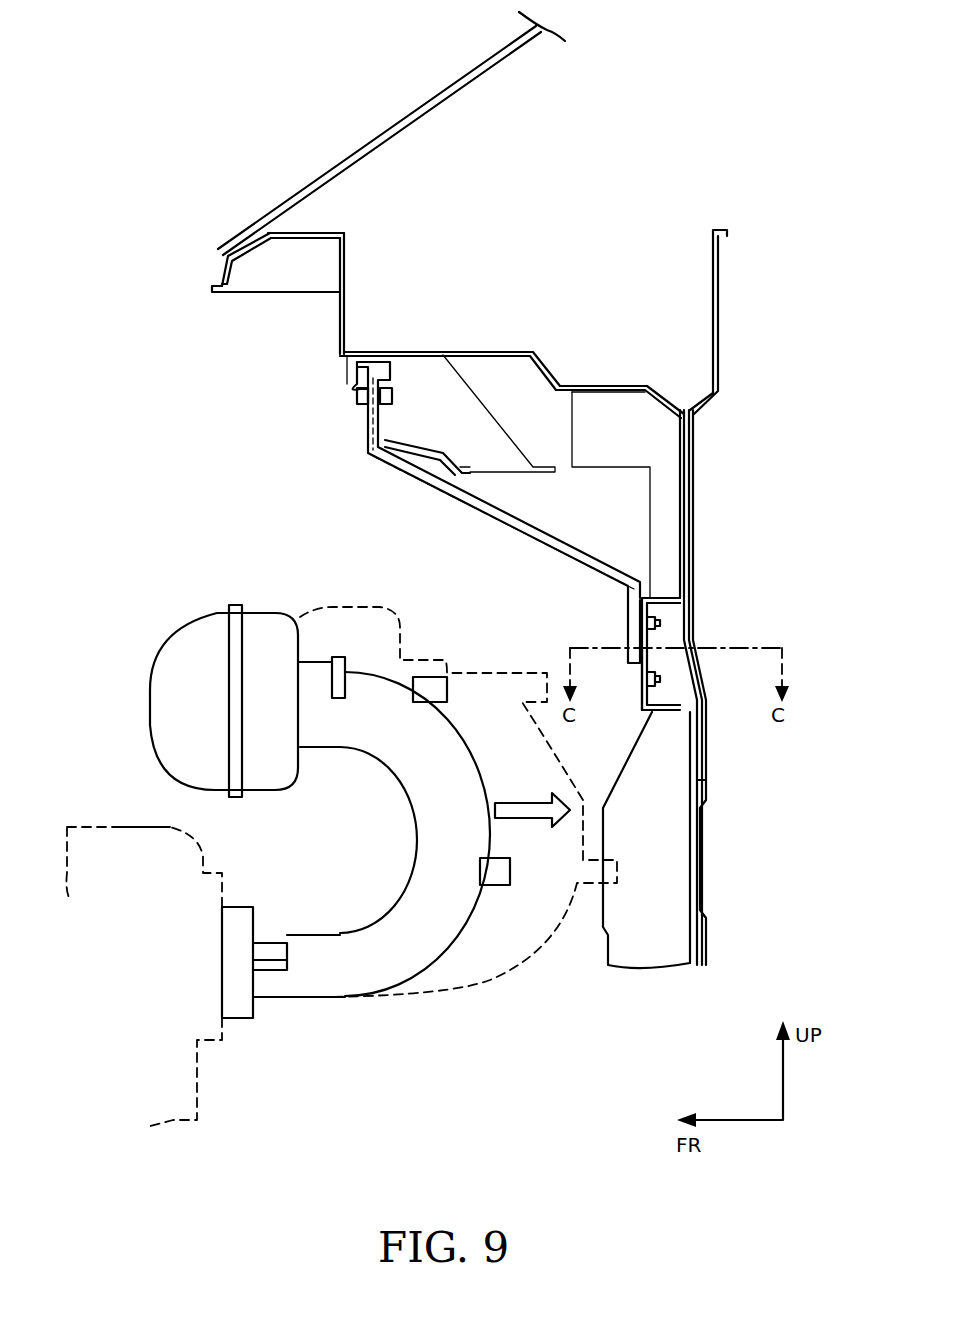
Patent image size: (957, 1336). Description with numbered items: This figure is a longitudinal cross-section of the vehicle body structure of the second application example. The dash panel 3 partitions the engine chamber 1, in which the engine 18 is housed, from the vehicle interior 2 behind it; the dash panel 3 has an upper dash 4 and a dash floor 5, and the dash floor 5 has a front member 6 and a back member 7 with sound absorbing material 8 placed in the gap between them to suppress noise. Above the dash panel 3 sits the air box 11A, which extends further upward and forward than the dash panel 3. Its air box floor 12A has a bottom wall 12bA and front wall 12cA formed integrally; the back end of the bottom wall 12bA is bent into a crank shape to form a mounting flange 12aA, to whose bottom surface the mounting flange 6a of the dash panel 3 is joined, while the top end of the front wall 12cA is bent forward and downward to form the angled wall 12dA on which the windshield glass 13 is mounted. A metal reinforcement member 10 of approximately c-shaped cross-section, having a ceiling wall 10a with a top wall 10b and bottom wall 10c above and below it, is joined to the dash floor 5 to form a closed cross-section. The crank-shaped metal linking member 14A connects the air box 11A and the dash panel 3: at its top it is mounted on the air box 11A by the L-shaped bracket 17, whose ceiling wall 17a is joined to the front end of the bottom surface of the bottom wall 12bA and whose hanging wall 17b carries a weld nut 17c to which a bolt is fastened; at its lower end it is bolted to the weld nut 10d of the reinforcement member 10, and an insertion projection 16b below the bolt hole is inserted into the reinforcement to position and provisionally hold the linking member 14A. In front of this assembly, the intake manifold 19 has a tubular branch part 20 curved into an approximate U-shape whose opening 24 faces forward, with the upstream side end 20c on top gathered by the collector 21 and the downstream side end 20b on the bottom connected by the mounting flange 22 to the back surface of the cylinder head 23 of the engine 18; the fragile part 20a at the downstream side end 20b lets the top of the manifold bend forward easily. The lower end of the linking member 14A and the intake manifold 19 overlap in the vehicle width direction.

The engine chamber 1 is at (312, 514).
The vehicle interior 2 is at (762, 350).
The dash panel 3 is at (737, 687).
The upper dash 4 is at (700, 412).
The dash floor 5 is at (712, 736).
The front member 6 is at (690, 781).
The mounting flange 6a is at (630, 396).
The back member 7 is at (706, 752).
The sound absorbing material 8 is at (690, 782).
The reinforcement member 10 is at (668, 641).
The ceiling wall 10a is at (640, 697).
The top wall 10b is at (657, 598).
The bottom wall 10c is at (655, 712).
The weld nut 10d is at (660, 622).
The air box 11A is at (514, 229).
The air box floor 12A is at (448, 310).
The mounting flange 12aA is at (590, 388).
The bottom wall 12bA is at (466, 352).
The front wall 12cA is at (363, 228).
The angled wall 12dA is at (249, 254).
The windshield glass 13 is at (377, 132).
The linking member 14A is at (528, 542).
The insertion projection 16b is at (660, 679).
The bracket 17 is at (376, 415).
The ceiling wall 17a is at (348, 375).
The hanging wall 17b is at (353, 401).
The weld nut 17c is at (394, 408).
The engine 18 is at (82, 812).
The intake manifold 19 is at (353, 1004).
The branch part 20 is at (381, 836).
The fragile part 20a is at (278, 942).
The downstream side end 20b is at (296, 998).
The upstream side end 20c is at (360, 670).
The collector 21 is at (192, 626).
The mounting flange 22 is at (238, 1022).
The cylinder head 23 is at (140, 824).
The opening 24 is at (376, 852).